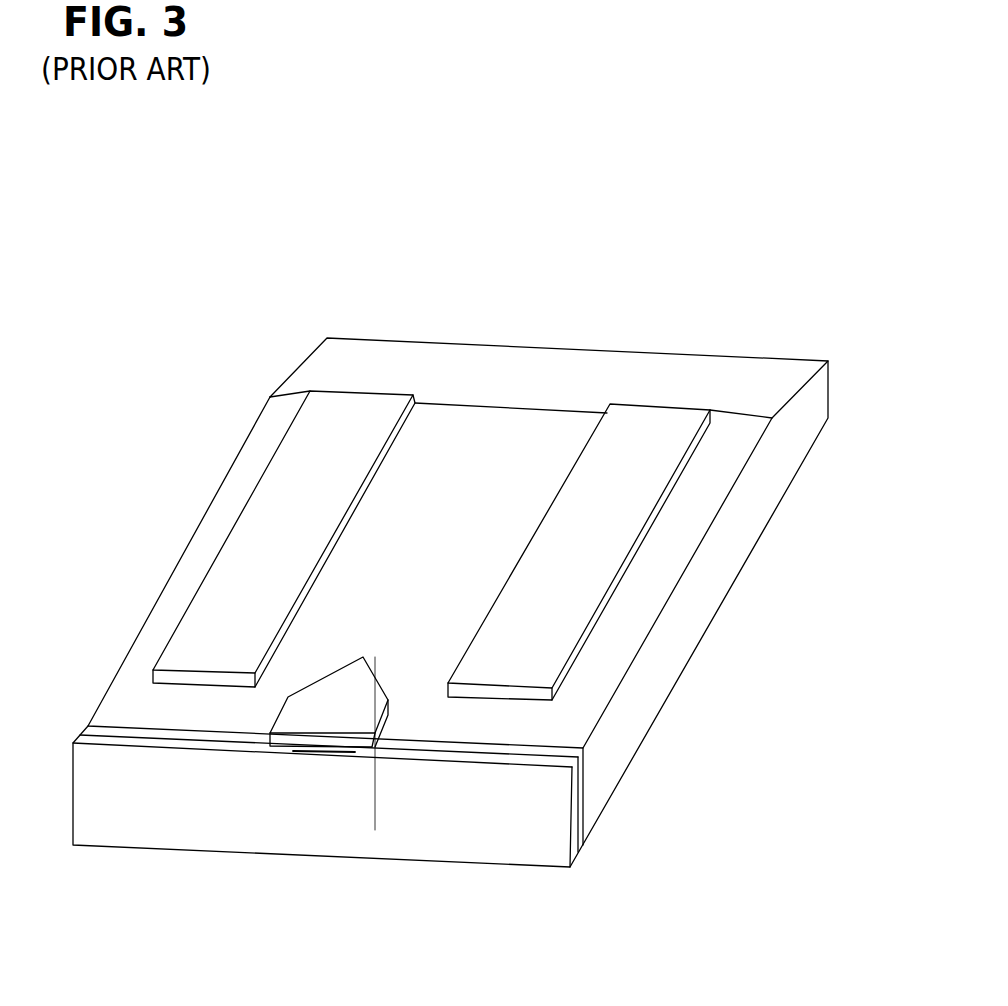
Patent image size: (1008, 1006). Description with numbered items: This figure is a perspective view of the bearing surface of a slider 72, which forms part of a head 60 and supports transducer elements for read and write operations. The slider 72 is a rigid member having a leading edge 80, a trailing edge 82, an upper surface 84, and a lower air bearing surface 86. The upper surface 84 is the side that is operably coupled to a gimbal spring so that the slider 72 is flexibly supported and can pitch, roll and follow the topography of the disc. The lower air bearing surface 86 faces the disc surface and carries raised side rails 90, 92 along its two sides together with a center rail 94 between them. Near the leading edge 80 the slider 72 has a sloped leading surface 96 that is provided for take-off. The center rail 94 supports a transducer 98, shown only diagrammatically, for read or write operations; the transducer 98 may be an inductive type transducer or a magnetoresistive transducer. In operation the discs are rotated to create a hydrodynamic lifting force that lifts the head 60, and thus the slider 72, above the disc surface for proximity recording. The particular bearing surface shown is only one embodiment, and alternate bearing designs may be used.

The head 60 is at (800, 218).
The slider 72 is at (535, 347).
The leading edge 80 is at (727, 353).
The trailing edge 82 is at (398, 744).
The upper surface 84 is at (688, 662).
The lower air bearing surface 86 is at (635, 448).
The side rail 90 is at (300, 550).
The side rail 92 is at (535, 532).
The center rail 94 is at (337, 692).
The sloped leading surface 96 is at (587, 393).
The transducer 98 is at (293, 752).